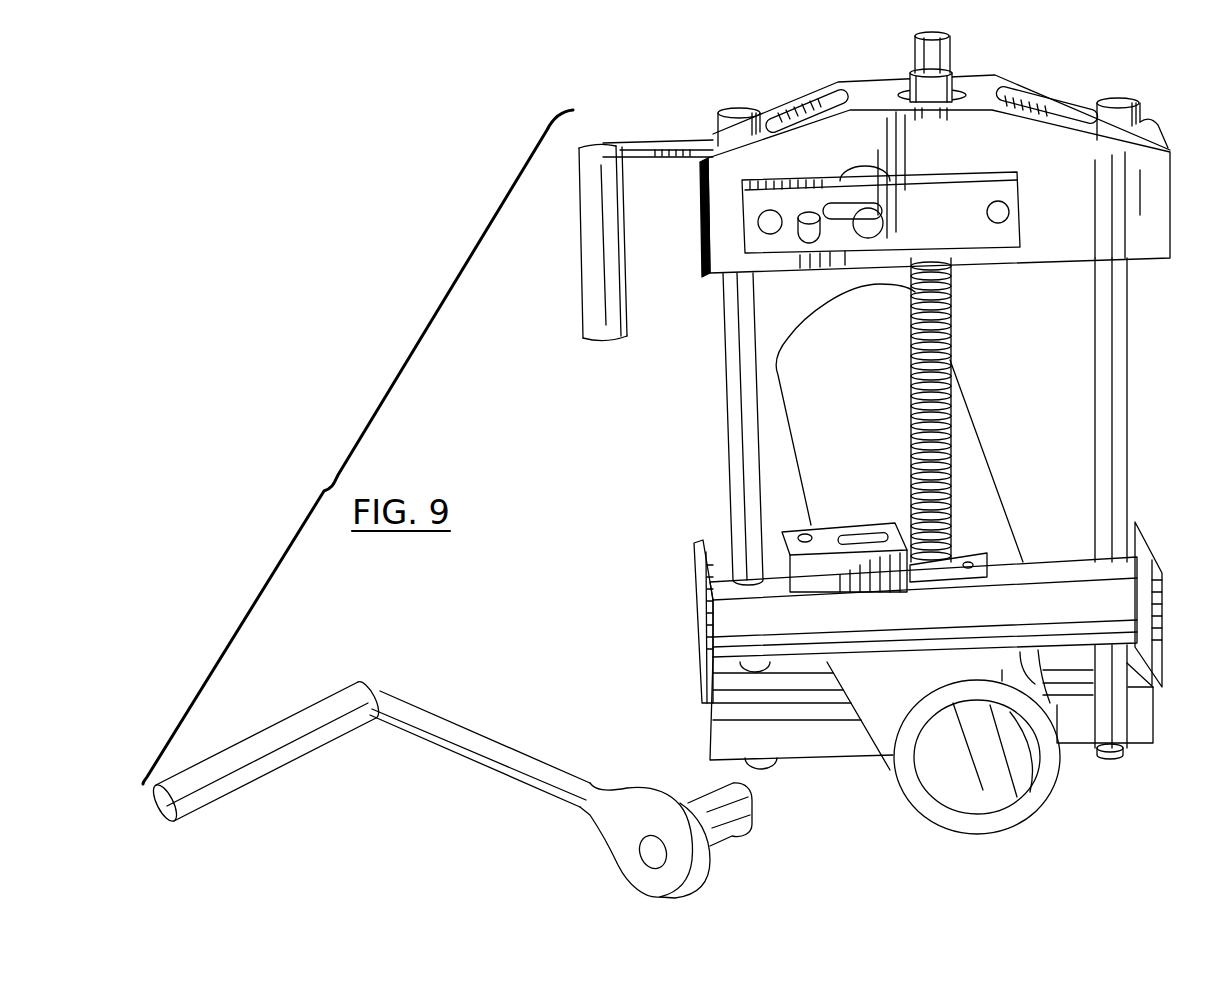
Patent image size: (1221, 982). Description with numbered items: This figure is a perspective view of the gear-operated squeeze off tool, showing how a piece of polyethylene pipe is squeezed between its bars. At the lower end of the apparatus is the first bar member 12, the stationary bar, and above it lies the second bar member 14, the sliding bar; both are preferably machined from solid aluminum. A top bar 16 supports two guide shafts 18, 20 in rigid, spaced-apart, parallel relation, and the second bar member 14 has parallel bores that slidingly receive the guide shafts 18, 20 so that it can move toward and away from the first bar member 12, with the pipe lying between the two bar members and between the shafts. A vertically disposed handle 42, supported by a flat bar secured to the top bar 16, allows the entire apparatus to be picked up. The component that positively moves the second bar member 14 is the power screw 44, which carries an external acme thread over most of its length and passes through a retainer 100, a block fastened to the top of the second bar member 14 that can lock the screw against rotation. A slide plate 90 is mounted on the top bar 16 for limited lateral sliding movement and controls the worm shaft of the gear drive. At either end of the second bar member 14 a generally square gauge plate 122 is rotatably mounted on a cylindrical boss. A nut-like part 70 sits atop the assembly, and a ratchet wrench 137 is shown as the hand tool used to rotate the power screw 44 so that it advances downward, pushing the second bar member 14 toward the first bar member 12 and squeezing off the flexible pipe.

The first bar member 12 is at (1143, 722).
The second bar member 14 is at (1065, 593).
The top bar 16 is at (1152, 233).
The guide shaft 18 is at (1120, 462).
The guide shaft 20 is at (733, 443).
The handle 42 is at (587, 247).
The power screw 44 is at (950, 328).
The knob 70 is at (950, 56).
The slide plate 90 is at (1008, 233).
The retainer 100 is at (870, 537).
The gauge plate 122 is at (1163, 624).
The ratchet wrench 137 is at (308, 722).